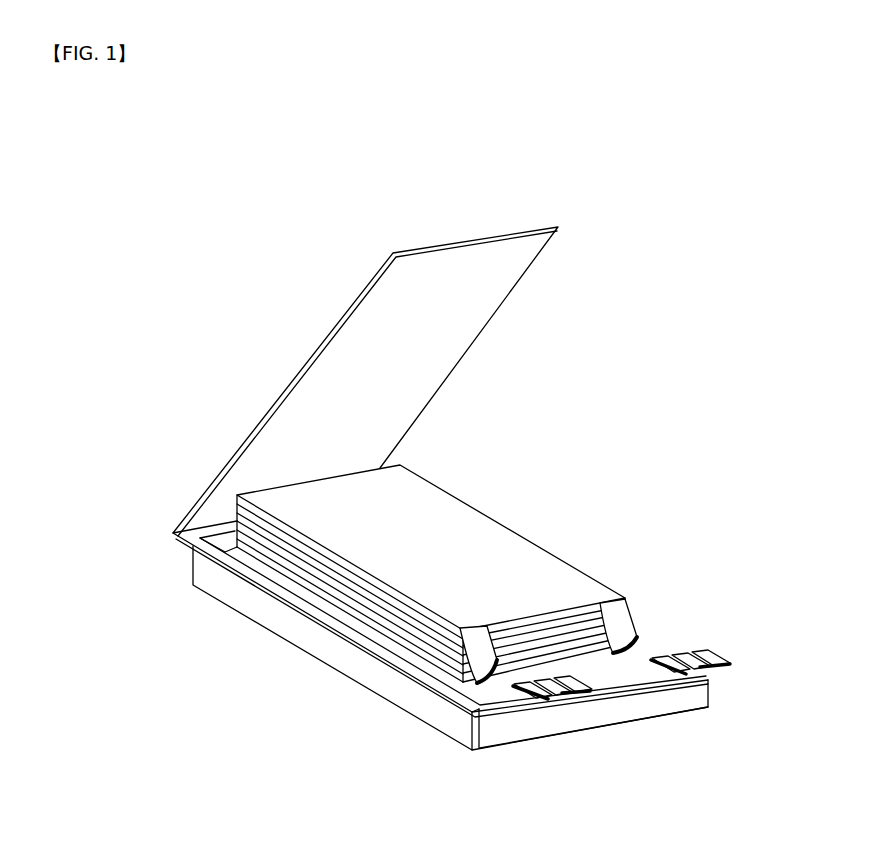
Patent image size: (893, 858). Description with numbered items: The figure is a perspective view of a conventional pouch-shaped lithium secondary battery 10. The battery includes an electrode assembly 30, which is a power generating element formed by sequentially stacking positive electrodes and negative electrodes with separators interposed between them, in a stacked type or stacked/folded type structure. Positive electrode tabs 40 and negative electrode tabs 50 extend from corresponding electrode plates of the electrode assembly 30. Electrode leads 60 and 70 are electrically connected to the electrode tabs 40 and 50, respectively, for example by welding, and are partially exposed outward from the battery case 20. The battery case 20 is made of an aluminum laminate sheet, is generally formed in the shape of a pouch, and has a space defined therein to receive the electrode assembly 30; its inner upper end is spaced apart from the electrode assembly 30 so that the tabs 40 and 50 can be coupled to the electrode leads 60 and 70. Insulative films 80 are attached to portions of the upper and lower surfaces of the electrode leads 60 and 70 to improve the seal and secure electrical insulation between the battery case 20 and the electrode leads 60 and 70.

The pouch-shaped lithium secondary battery 10 is at (188, 311).
The battery case 20 is at (175, 535).
The electrode assembly 30 is at (514, 486).
The positive electrode tab 40 is at (413, 664).
The negative electrode tab 50 is at (642, 620).
The electrode lead 60 is at (470, 715).
The electrode lead 70 is at (700, 650).
The insulative film 80 is at (517, 715).